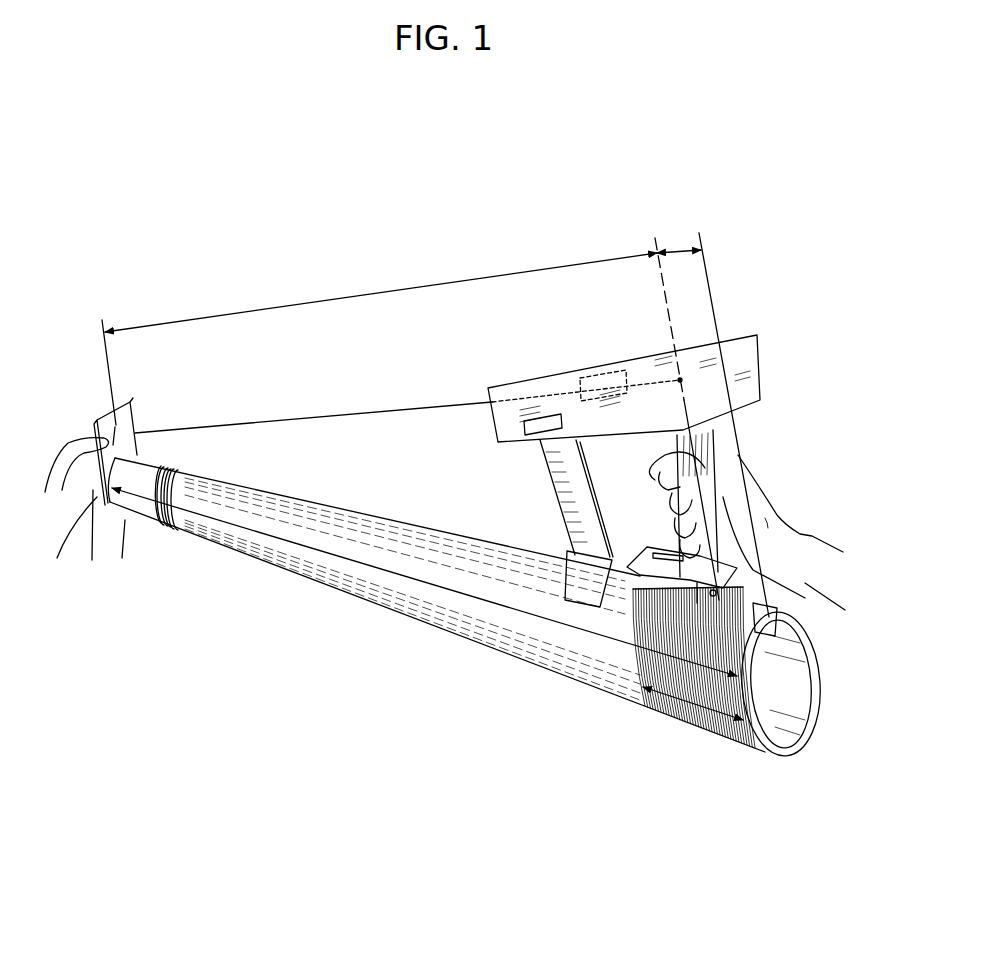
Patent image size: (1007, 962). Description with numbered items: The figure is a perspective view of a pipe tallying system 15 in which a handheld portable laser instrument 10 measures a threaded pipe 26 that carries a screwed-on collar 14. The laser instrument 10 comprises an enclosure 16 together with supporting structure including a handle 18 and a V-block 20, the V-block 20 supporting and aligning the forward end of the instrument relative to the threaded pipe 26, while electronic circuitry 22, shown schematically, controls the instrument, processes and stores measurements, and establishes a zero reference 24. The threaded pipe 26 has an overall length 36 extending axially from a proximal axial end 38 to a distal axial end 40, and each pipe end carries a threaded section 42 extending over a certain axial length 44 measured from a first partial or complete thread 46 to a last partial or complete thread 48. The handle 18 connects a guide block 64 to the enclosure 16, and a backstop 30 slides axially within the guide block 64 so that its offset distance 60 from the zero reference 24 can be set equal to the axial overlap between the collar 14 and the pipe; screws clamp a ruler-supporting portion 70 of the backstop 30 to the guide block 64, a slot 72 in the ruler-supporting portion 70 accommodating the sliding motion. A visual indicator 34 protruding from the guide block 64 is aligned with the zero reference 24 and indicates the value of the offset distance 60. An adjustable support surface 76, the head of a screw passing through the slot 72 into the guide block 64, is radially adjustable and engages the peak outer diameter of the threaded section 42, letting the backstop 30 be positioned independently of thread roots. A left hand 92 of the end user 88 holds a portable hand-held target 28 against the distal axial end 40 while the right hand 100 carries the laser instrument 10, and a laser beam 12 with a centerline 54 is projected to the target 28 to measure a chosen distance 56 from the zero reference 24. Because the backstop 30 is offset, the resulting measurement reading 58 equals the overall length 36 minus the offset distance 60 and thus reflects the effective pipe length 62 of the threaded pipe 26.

The handheld portable laser instrument 10 is at (768, 272).
The laser beam 12 is at (322, 417).
The collar 14 is at (131, 513).
The pipe tallying system 15 is at (170, 238).
The enclosure 16 is at (510, 443).
The handle 18 is at (740, 433).
The V-block 20 is at (577, 590).
The electronic circuitry 22 is at (600, 375).
The zero reference 24 is at (680, 455).
The threaded pipe 26 is at (196, 470).
The portable hand-held target 28 is at (133, 423).
The backstop 30 is at (770, 623).
The visual indicator 34 is at (690, 590).
The overall length 36 is at (270, 533).
The proximal axial end 38 is at (817, 713).
The distal axial end 40 is at (110, 493).
The threaded section 42 is at (173, 533).
The certain axial length 44 is at (653, 690).
The first partial or complete thread 46 is at (775, 700).
The last partial or complete thread 48 is at (186, 516).
The centerline 54 is at (417, 407).
The chosen distance 56 is at (342, 295).
The measurement reading 58 is at (543, 417).
The offset distance 60 is at (668, 250).
The effective pipe length 62 is at (462, 280).
The guide block 64 is at (716, 570).
The ruler-supporting portion 70 is at (642, 556).
The slot 72 is at (673, 553).
The adjustable support surface 76 is at (710, 617).
The end user 88 is at (808, 534).
The left hand 92 is at (67, 458).
The right hand 100 is at (778, 512).